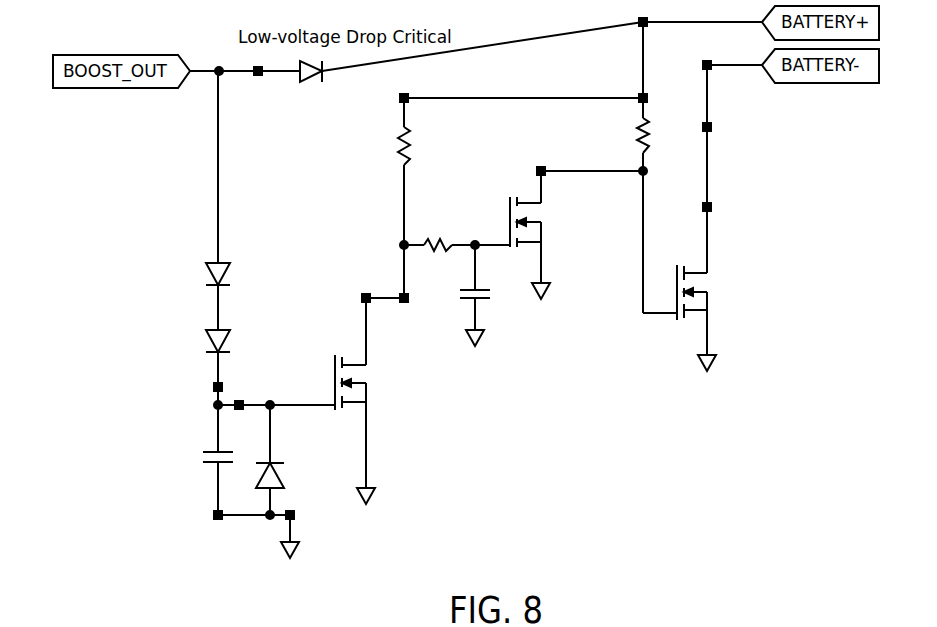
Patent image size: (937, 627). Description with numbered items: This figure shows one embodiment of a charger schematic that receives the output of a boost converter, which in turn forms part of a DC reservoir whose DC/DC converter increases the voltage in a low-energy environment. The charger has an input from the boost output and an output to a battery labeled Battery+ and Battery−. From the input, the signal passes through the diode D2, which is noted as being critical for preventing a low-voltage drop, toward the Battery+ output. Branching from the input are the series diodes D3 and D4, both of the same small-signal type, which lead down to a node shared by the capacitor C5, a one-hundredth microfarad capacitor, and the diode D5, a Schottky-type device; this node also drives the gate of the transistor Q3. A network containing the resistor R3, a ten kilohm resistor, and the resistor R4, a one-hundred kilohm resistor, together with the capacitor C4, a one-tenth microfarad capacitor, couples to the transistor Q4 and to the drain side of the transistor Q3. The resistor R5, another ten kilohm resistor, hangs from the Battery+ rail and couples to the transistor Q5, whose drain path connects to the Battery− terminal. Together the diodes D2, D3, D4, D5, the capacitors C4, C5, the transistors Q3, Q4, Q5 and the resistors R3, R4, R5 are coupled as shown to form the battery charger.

The diode D2 is at (312, 86).
The diode D3 is at (255, 277).
The diode D4 is at (255, 344).
The diode D5 is at (300, 466).
The resistor R3 is at (426, 145).
The resistor R4 is at (437, 245).
The resistor R5 is at (664, 137).
The capacitor C4 is at (464, 295).
The capacitor C5 is at (189, 461).
The transistor Q3 is at (341, 429).
The transistor Q4 is at (516, 248).
The transistor Q5 is at (683, 318).